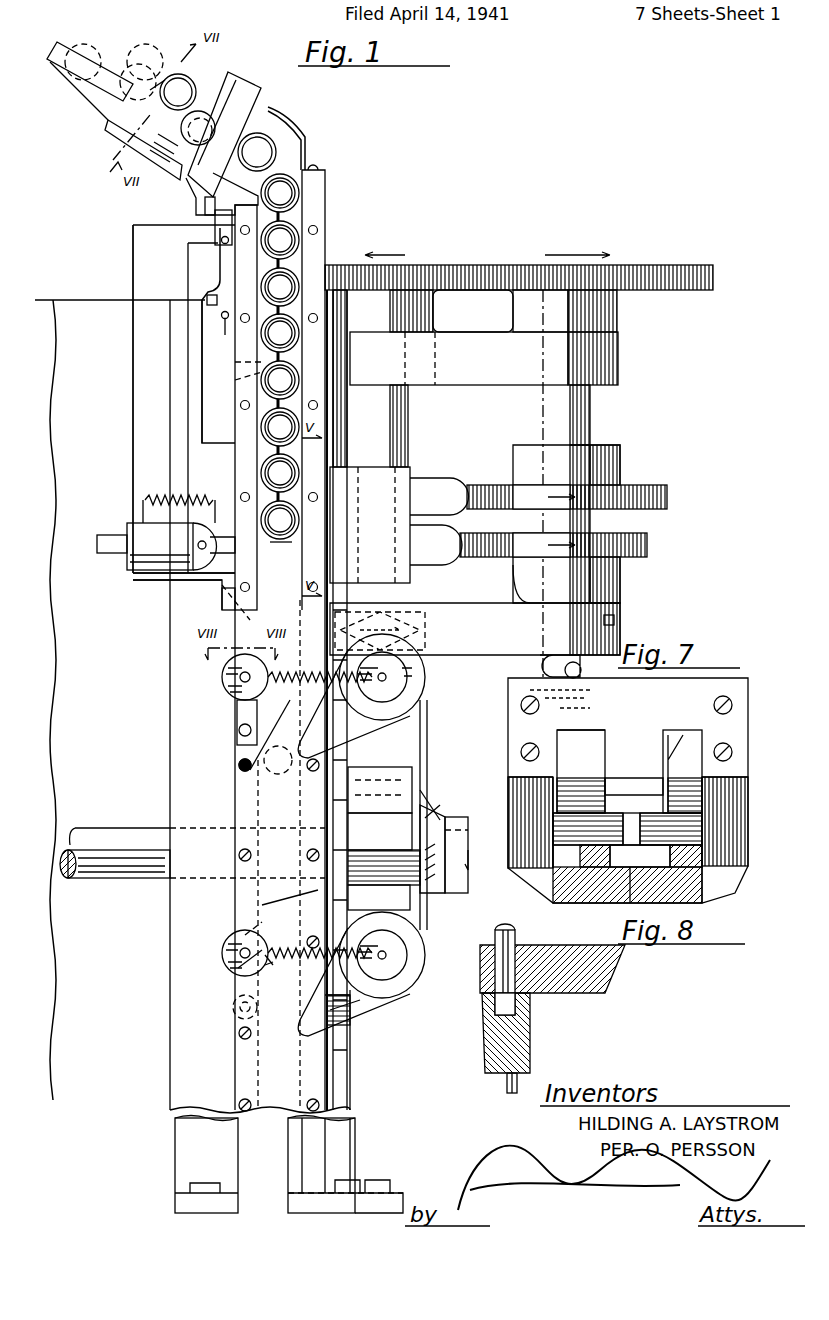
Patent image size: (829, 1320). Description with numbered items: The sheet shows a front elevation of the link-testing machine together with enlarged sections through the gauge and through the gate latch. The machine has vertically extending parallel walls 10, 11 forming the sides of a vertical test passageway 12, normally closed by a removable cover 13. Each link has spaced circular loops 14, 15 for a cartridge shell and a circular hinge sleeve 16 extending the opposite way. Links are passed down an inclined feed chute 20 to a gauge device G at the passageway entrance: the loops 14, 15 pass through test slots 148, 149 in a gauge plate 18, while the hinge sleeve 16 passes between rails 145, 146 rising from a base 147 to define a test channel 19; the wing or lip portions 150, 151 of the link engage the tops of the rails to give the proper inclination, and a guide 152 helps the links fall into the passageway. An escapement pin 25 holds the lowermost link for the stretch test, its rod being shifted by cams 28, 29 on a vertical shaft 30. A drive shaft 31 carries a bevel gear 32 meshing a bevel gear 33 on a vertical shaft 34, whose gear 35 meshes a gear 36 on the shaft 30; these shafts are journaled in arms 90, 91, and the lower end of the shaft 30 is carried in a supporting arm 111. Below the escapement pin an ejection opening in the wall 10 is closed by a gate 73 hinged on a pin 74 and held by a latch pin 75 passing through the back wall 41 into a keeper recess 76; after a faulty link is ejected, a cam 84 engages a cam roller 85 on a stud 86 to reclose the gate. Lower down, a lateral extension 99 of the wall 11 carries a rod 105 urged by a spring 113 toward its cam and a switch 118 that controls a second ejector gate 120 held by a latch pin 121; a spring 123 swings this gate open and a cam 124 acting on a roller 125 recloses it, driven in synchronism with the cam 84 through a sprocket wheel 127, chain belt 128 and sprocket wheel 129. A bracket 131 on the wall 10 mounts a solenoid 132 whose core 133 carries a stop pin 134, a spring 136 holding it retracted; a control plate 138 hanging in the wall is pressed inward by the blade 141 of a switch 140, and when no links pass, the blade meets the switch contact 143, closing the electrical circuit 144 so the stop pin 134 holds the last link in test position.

In FIG. 1, the wall 10 is at (235, 468).
In FIG. 1, the wall 11 is at (335, 494).
In FIG. 1, the vertical test passageway 12 is at (305, 200).
In FIG. 1, the removable cover 13 is at (268, 922).
In FIG. 1, the circular loop 14 is at (178, 74).
In FIG. 7, the circular loop 14 is at (590, 755).
In FIG. 1, the circular loop 15 is at (186, 84).
In FIG. 7, the circular loop 15 is at (670, 745).
In FIG. 1, the hinge sleeve 16 is at (205, 118).
In FIG. 7, the hinge sleeve 16 is at (640, 905).
In FIG. 1, the gauge plate 18 is at (247, 84).
In FIG. 7, the gauge plate 18 is at (740, 728).
In FIG. 7, the test channel 19 is at (600, 903).
In FIG. 1, the feed chute 20 is at (70, 70).
In FIG. 1, the escapement pin 25 is at (294, 520).
In FIG. 1, the cam 28 is at (625, 490).
In FIG. 1, the cam 29 is at (647, 545).
In FIG. 1, the vertical shaft 30 is at (590, 418).
In FIG. 1, the drive shaft 31 is at (107, 840).
In FIG. 1, the bevel gear 32 is at (442, 822).
In FIG. 1, the bevel gear 33 is at (432, 790).
In FIG. 1, the vertical shaft 34 is at (408, 428).
In FIG. 1, the gear 35 is at (408, 265).
In FIG. 1, the gear 36 is at (688, 248).
In FIG. 8, the back wall 41 is at (598, 975).
In FIG. 1, the ejector gate 73 is at (258, 716).
In FIG. 1, the pin 74 is at (240, 762).
In FIG. 8, the pin 74 is at (505, 1088).
In FIG. 1, the latch pin 75 is at (248, 640).
In FIG. 8, the latch pin 75 is at (498, 985).
In FIG. 8, the keeper recess 76 is at (530, 1020).
In FIG. 1, the cam 84 is at (238, 722).
In FIG. 1, the cam roller 85 is at (222, 680).
In FIG. 1, the stud 86 is at (245, 690).
In FIG. 1, the arm 90 is at (505, 380).
In FIG. 1, the arm 91 is at (477, 615).
In FIG. 1, the lateral extension 99 is at (468, 828).
In FIG. 1, the rod 105 is at (470, 850).
In FIG. 1, the supporting arm 111 is at (308, 888).
In FIG. 1, the spring 113 is at (428, 818).
In FIG. 1, the switch 118 is at (360, 800).
In FIG. 1, the ejector gate 120 is at (233, 1005).
In FIG. 1, the latch pin 121 is at (318, 906).
In FIG. 1, the spring 123 is at (352, 975).
In FIG. 1, the cam 124 is at (363, 995).
In FIG. 1, the roller 125 is at (236, 963).
In FIG. 1, the sprocket wheel 127 is at (416, 712).
In FIG. 1, the chain belt 128 is at (425, 935).
In FIG. 1, the sprocket wheel 129 is at (415, 925).
In FIG. 1, the bracket 131 is at (160, 585).
In FIG. 1, the solenoid 132 is at (145, 548).
In FIG. 1, the core 133 is at (118, 530).
In FIG. 1, the stop pin 134 is at (323, 573).
In FIG. 1, the spring 136 is at (175, 497).
In FIG. 1, the control plate 138 is at (260, 380).
In FIG. 1, the switch 140 is at (222, 290).
In FIG. 1, the switch blade 141 is at (203, 355).
In FIG. 1, the switch contact 143 is at (218, 300).
In FIG. 1, the electrical circuit 144 is at (133, 272).
In FIG. 7, the rail 145 is at (556, 885).
In FIG. 7, the rail 146 is at (705, 858).
In FIG. 1, the base 147 is at (124, 136).
In FIG. 7, the base 147 is at (700, 905).
In FIG. 7, the test slot 148 is at (592, 733).
In FIG. 7, the test slot 149 is at (690, 735).
In FIG. 7, the lip portion 150 is at (568, 823).
In FIG. 1, the lip portion 151 is at (186, 178).
In FIG. 7, the lip portion 151 is at (690, 828).
In FIG. 1, the guide 152 is at (306, 140).
In FIG. 1, the gauge device G is at (232, 78).
In FIG. 7, the gauge device G is at (735, 805).